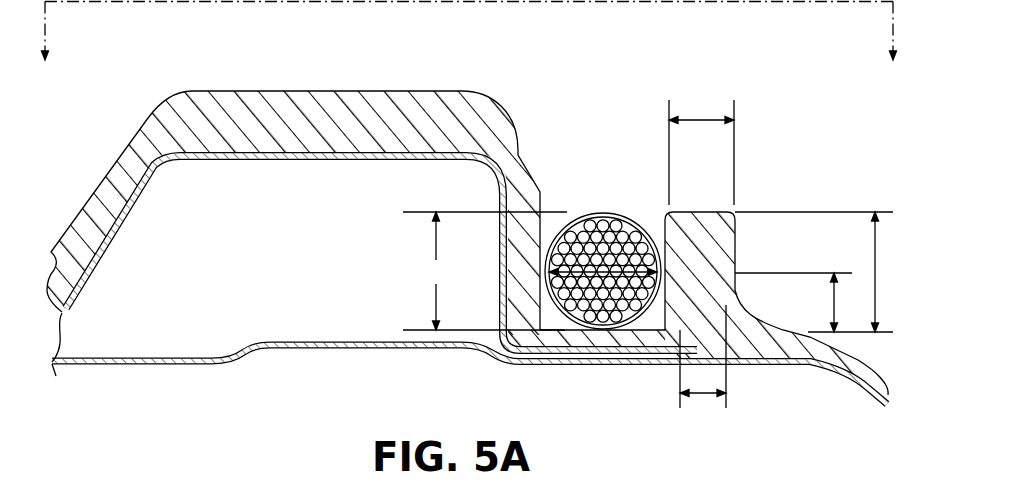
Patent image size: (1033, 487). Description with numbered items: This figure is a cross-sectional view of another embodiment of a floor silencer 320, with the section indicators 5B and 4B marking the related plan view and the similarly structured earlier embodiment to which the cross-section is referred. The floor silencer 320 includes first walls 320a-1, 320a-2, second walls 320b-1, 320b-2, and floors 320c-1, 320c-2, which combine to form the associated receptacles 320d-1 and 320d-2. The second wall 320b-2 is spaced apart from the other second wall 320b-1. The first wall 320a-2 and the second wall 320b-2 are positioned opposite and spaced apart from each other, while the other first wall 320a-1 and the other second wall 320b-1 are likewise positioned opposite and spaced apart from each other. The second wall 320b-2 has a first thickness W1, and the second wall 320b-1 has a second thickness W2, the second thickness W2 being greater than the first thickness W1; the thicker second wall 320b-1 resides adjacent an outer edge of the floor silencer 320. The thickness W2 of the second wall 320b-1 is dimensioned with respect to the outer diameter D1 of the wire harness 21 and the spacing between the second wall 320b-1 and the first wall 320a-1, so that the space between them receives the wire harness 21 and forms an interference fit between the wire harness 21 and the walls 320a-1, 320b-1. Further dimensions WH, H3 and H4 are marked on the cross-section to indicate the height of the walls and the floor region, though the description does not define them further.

The floor silencer 320 is at (366, 91).
The first wall 320a-1 is at (530, 196).
The first wall 320a-2 is at (349, 213).
The second wall 320b-1 is at (710, 212).
The second wall 320b-2 is at (667, 328).
The floor 320c-1 is at (618, 332).
The floor 320c-2 is at (602, 380).
The receptacle 320d-1 is at (562, 328).
The receptacle 320d-2 is at (469, 363).
The wire harness 21 is at (603, 213).
The outer diameter of wire harness D1 is at (592, 272).
The wall height WH is at (485, 271).
The first thickness W1 is at (703, 356).
The second thickness W2 is at (701, 151).
The height dimension H3 is at (793, 302).
The height dimension H4 is at (820, 272).
The plan view section indicator 5B is at (463, 52).
The section indicator 4B is at (896, 52).